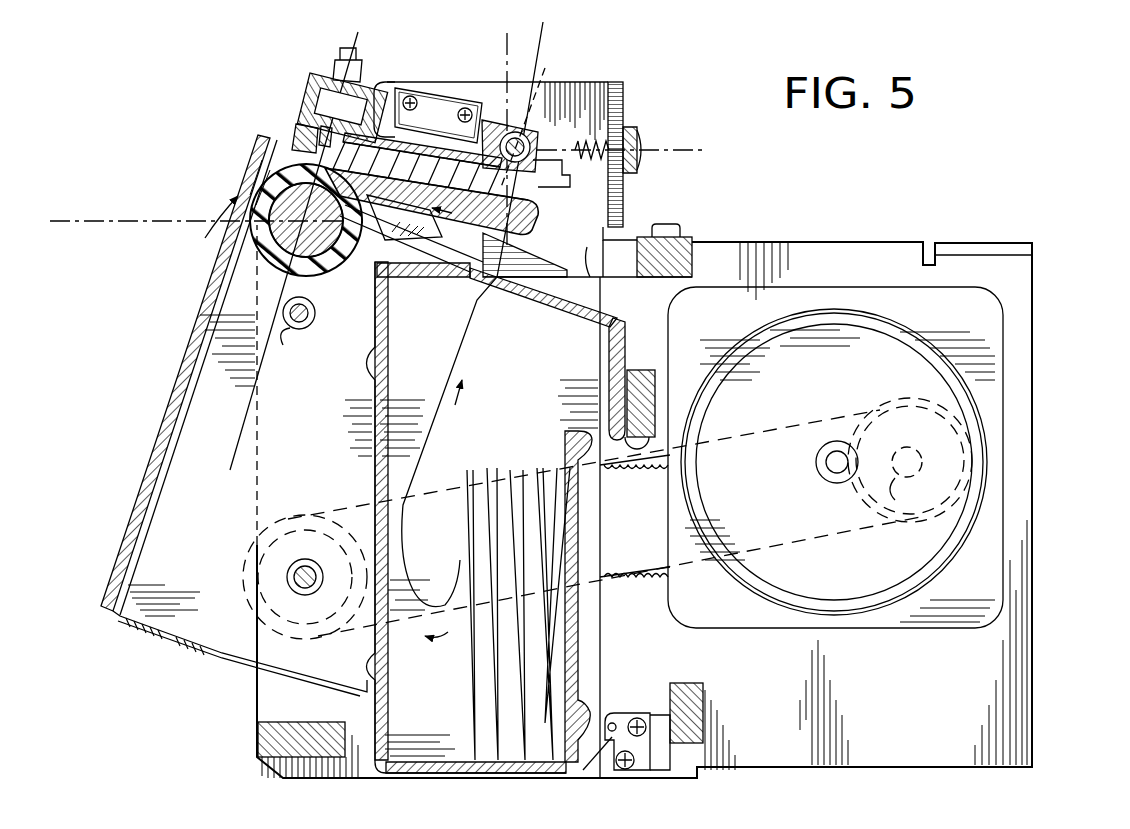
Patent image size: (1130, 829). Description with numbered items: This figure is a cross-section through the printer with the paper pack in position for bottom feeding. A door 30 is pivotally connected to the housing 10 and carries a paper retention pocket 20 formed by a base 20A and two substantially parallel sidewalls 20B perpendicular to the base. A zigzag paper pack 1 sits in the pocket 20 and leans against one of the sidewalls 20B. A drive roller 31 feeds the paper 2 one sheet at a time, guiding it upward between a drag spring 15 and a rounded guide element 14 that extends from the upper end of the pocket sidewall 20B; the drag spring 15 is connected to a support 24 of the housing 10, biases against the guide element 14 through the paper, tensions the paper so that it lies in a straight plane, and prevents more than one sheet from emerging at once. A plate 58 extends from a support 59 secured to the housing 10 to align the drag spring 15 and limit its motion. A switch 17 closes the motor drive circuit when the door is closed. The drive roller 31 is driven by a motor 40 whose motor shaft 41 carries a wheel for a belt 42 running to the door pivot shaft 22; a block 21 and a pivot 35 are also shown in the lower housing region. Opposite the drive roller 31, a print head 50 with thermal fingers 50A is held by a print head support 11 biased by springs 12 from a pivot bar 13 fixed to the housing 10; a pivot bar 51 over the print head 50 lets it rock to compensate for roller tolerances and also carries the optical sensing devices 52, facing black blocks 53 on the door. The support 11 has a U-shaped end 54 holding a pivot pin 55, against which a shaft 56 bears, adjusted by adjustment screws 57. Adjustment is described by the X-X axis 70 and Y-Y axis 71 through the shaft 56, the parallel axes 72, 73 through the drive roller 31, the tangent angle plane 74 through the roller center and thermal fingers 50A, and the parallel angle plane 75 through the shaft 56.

The zigzag paper pack 1 is at (460, 660).
The paper 2 is at (420, 268).
The housing 10 is at (1036, 743).
The print head support 11 is at (295, 133).
The springs 12 is at (300, 128).
The pivot bar 13 is at (318, 92).
The rounded guide element 14 is at (472, 290).
The drag spring 15 is at (535, 305).
The switch 17 is at (640, 762).
The paper retention pocket 20 is at (372, 422).
The base 20A is at (450, 778).
The sidewalls 20B is at (378, 478).
The support block 21 is at (270, 740).
The door pivot shaft 22 is at (296, 578).
The support 24 is at (650, 350).
The door 30 is at (150, 470).
The drive roller 31 is at (262, 268).
The pivot 35 is at (301, 350).
The motor 40 is at (858, 632).
The motor shaft 41 is at (894, 460).
The belt 42 is at (618, 580).
The print head 50 is at (287, 153).
The thermal fingers 50A is at (298, 168).
The pivot bar 51 is at (373, 87).
The optical sensing devices 52 is at (492, 228).
The blocks 53 is at (402, 240).
The U-shaped end 54 is at (545, 128).
The pivot pin 55 is at (540, 80).
The shaft 56 is at (569, 178).
The adjustment screws 57 is at (640, 148).
The plate 58 is at (582, 255).
The support 59 is at (685, 236).
The X-X axis 70 is at (676, 152).
The Y-Y axis 71 is at (506, 50).
The parallel axis 72 is at (70, 222).
The parallel axis 73 is at (321, 282).
The tangent angle plane 74 is at (354, 42).
The parallel angle plane 75 is at (545, 37).